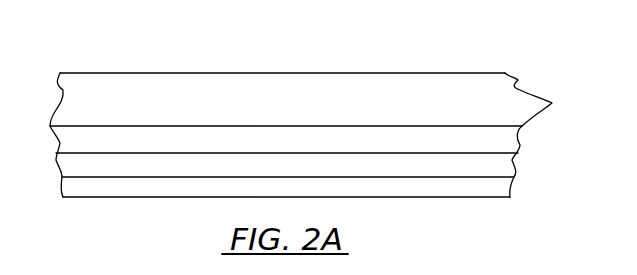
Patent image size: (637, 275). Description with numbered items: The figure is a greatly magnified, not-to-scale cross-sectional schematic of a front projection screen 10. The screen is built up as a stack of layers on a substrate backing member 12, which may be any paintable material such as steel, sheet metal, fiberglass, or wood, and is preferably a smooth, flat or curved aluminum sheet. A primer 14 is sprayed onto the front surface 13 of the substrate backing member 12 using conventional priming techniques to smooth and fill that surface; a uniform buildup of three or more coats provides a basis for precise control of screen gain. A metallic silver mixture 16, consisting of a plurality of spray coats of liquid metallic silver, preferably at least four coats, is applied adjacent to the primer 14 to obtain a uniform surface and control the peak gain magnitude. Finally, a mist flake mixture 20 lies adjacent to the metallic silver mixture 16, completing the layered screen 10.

The front projection screen 10 is at (313, 104).
The substrate backing member 12 is at (367, 110).
The front surface 13 is at (538, 122).
The primer 14 is at (339, 149).
The metallic silver mixture 16 is at (449, 175).
The mist flake mixture 20 is at (286, 186).